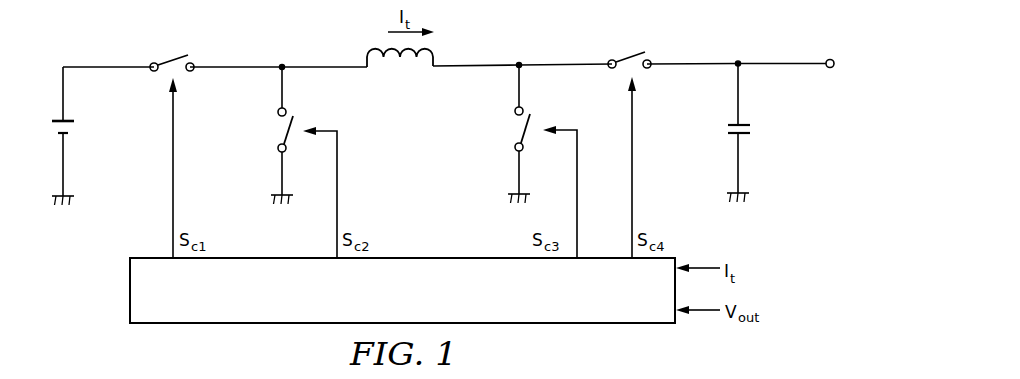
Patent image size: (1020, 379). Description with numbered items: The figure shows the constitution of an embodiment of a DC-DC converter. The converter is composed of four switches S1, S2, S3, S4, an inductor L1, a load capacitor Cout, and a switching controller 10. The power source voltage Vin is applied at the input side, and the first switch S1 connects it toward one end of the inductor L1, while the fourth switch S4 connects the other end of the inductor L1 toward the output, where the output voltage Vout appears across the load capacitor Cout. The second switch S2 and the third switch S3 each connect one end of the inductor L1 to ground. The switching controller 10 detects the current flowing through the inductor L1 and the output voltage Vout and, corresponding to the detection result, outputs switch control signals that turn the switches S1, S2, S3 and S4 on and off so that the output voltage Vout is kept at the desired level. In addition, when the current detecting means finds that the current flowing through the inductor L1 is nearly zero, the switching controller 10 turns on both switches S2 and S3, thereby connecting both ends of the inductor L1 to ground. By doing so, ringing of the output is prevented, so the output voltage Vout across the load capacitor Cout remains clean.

The switching controller 10 is at (130, 293).
The switch S1 is at (172, 48).
The switch S2 is at (269, 135).
The switch S3 is at (506, 134).
The switch S4 is at (629, 47).
The inductor L1 is at (395, 45).
The load capacitor Cout is at (759, 133).
The power source voltage Vin is at (46, 136).
The output voltage Vout is at (851, 67).